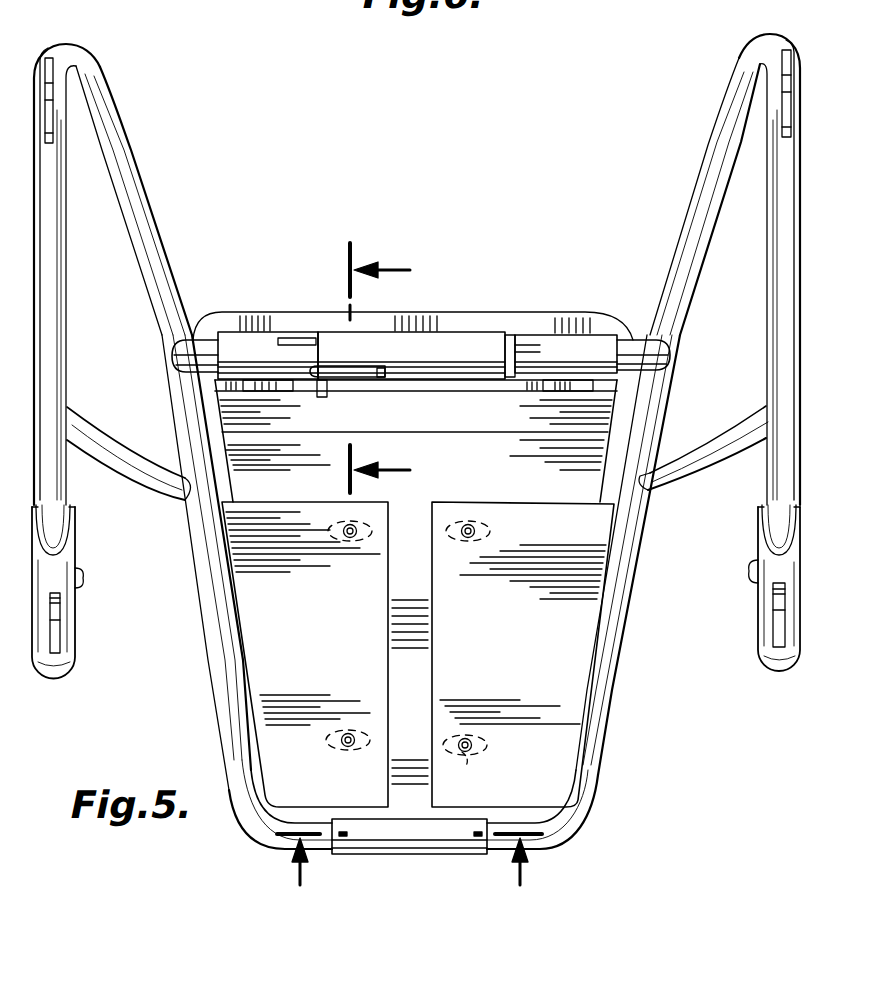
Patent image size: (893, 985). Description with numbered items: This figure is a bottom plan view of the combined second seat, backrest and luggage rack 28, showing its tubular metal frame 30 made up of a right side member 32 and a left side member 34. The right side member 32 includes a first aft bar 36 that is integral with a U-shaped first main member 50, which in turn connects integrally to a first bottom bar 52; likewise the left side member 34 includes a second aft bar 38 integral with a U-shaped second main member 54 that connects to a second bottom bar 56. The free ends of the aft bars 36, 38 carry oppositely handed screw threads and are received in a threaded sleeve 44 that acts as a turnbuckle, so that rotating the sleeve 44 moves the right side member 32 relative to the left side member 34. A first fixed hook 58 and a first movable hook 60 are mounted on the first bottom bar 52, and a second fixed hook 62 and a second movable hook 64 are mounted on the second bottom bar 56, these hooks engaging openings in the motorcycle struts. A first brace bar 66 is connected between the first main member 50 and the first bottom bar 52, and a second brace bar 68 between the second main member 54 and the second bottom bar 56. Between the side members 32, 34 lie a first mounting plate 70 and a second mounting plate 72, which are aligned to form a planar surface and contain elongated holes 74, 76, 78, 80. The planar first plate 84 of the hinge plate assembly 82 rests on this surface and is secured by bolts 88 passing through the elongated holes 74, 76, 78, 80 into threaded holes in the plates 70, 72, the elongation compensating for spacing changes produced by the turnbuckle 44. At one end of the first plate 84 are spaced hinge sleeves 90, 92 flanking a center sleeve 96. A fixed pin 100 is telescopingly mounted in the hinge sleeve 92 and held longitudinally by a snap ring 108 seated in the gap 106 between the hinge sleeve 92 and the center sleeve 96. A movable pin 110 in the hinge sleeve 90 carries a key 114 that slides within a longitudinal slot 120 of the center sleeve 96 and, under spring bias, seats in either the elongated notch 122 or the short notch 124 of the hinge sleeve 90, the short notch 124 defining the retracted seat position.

The combined second seat, backrest and luggage rack 28 is at (437, 138).
The frame 30 is at (624, 770).
The right side member 32 is at (128, 151).
The left side member 34 is at (707, 154).
The first aft bar 36 is at (283, 845).
The second aft bar 38 is at (553, 850).
The threaded sleeve 44 is at (440, 860).
The first main member 50 is at (212, 708).
The first bottom bar 52 is at (66, 285).
The second main member 54 is at (613, 708).
The second bottom bar 56 is at (780, 262).
The first fixed hook 58 is at (49, 58).
The first movable hook 60 is at (60, 623).
The second fixed hook 62 is at (775, 30).
The second movable hook 64 is at (775, 618).
The first brace bar 66 is at (133, 448).
The second brace bar 68 is at (742, 432).
The first mounting plate 70 is at (288, 642).
The second mounting plate 72 is at (527, 647).
The elongated hole 74 is at (366, 558).
The elongated hole 76 is at (345, 745).
The elongated hole 78 is at (490, 531).
The elongated hole 80 is at (490, 757).
The hinge plate assembly 82 is at (445, 315).
The first plate 84 is at (563, 492).
The bolt 88 is at (482, 748).
The hinge sleeve 90 is at (252, 340).
The hinge sleeve 92 is at (587, 340).
The center sleeve 96 is at (478, 345).
The fixed pin 100 is at (668, 354).
The gap 106 is at (525, 378).
The snap ring 108 is at (527, 343).
The movable pin 110 is at (172, 355).
The key 114 is at (347, 365).
The longitudinal slot 120 is at (383, 378).
The elongated notch 122 is at (305, 337).
The short notch 124 is at (326, 388).